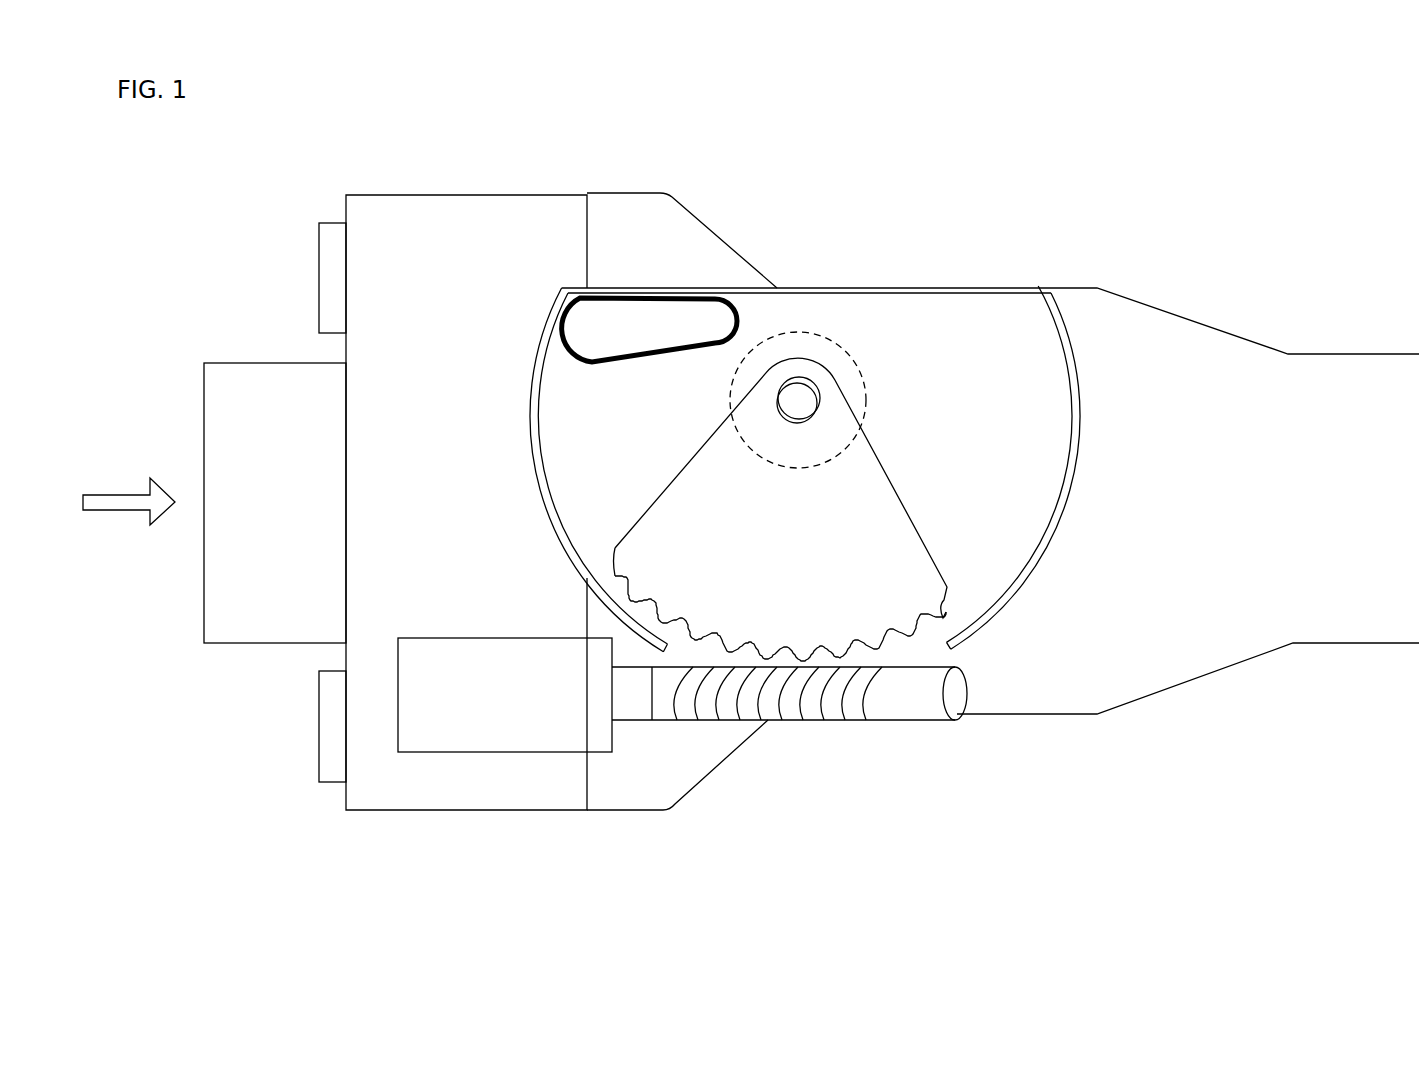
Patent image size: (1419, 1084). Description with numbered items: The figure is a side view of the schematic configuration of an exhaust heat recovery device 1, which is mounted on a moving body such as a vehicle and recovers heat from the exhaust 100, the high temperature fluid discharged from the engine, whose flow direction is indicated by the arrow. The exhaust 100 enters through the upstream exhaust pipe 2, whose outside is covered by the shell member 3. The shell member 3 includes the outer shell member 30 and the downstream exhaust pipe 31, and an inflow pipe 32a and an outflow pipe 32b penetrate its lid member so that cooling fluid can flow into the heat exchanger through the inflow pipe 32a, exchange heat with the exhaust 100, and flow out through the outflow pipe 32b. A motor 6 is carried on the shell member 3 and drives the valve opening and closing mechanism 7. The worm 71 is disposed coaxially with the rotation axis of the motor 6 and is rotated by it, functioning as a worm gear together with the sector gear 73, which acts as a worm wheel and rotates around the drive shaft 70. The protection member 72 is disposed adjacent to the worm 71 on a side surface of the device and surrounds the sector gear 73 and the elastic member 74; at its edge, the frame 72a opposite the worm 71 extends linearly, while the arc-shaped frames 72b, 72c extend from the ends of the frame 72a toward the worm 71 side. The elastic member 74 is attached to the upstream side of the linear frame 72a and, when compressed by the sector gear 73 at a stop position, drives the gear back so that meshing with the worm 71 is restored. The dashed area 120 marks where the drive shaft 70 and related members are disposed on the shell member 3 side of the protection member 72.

The exhaust heat recovery device 1 is at (1052, 160).
The upstream exhaust pipe 2 is at (269, 382).
The shell member 3 is at (507, 478).
The outer shell member 30 is at (440, 790).
The downstream exhaust pipe 31 is at (666, 206).
The inflow pipe 32a is at (322, 748).
The outflow pipe 32b is at (327, 252).
The motor 6 is at (507, 752).
The valve opening and closing mechanism 7 is at (881, 565).
The drive shaft 70 is at (800, 408).
The worm 71 is at (913, 699).
The protection member 72 is at (810, 428).
The frame 72a is at (755, 290).
The frame 72b is at (538, 477).
The frame 72c is at (1062, 488).
The sector gear 73 is at (883, 498).
The elastic member 74 is at (573, 358).
The exhaust 100 is at (129, 490).
The dashed area 120 is at (857, 340).